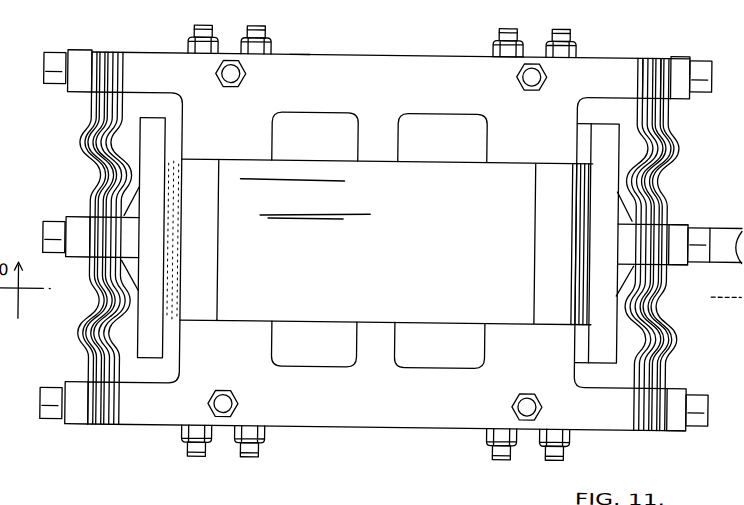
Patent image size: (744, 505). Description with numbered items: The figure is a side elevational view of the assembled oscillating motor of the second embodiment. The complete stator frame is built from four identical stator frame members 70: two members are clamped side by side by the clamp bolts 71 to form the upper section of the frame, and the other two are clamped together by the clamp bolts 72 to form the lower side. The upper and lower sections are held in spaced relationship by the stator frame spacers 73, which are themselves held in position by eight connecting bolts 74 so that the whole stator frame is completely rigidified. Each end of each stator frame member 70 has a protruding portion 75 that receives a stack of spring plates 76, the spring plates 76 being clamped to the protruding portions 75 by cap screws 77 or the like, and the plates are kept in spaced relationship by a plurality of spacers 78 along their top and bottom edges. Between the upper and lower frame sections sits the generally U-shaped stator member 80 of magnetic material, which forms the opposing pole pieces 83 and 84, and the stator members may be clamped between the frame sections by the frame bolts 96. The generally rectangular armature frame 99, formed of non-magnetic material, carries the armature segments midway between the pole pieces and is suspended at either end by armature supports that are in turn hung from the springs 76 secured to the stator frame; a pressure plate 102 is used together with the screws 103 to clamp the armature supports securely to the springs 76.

The stator frame member 70 is at (394, 60).
The clamp bolt 71 is at (243, 75).
The clamp bolt 72 is at (243, 403).
The stator frame spacer 73 is at (206, 250).
The connecting bolt 74 is at (196, 23).
The protruding portion 75 is at (158, 62).
The spring plate 76 is at (663, 118).
The cap screw 77 is at (47, 77).
The spacer 78 is at (659, 58).
The stator member 80 is at (376, 252).
The pole piece 83 is at (507, 28).
The pole piece 84 is at (300, 27).
The frame bolt 96 is at (265, 27).
The armature frame 99 is at (172, 123).
The pressure plate 102 is at (680, 220).
The screw 103 is at (704, 220).